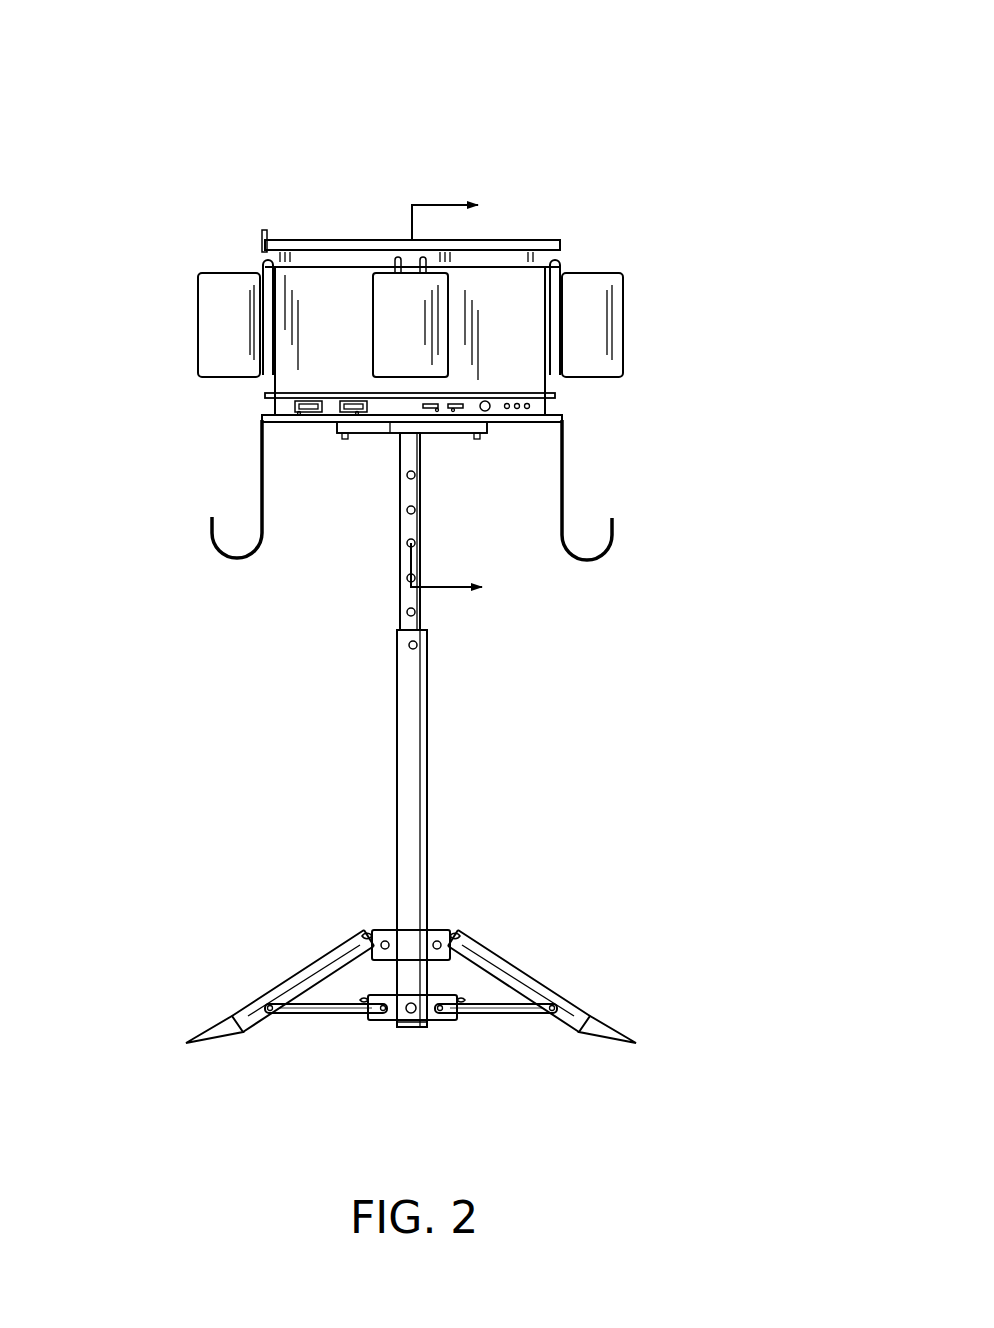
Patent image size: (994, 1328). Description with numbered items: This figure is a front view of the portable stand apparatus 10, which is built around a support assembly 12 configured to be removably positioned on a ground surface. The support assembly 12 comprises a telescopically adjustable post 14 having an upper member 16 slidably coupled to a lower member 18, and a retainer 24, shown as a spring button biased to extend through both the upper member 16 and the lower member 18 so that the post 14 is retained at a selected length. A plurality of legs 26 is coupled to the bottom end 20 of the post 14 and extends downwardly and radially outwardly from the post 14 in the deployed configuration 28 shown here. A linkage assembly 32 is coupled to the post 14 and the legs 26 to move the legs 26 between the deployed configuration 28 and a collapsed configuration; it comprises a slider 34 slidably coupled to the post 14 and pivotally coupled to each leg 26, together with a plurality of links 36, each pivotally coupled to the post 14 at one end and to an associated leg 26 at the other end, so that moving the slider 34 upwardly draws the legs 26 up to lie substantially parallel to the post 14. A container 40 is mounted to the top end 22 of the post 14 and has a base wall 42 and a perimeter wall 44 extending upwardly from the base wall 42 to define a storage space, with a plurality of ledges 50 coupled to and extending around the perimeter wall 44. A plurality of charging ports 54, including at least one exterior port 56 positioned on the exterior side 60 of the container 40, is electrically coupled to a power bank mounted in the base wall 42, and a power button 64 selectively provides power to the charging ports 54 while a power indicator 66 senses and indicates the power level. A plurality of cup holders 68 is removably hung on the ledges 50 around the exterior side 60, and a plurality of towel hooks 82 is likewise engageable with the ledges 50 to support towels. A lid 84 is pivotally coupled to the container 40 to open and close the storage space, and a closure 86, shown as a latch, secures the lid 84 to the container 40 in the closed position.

The portable stand apparatus 10 is at (722, 172).
The support assembly 12 is at (478, 805).
The post 14 is at (368, 735).
The upper member 16 is at (410, 530).
The lower member 18 is at (417, 776).
The bottom end 20 is at (410, 1025).
The top end 22 is at (413, 442).
The retainer 24 is at (420, 645).
The legs 26 is at (302, 981).
The deployed configuration 28 is at (615, 983).
The linkage assembly 32 is at (480, 1090).
The slider 34 is at (445, 931).
The links 36 is at (318, 1012).
The container 40 is at (586, 238).
The base wall 42 is at (305, 420).
The perimeter wall 44 is at (315, 323).
The ledges 50 is at (328, 250).
The charging ports 54 is at (298, 413).
The exterior port 56 is at (713, 370).
The exterior side 60 is at (510, 302).
The power button 64 is at (490, 411).
The power indicator 66 is at (571, 402).
The cup holders 68 is at (218, 280).
The towel hooks 82 is at (225, 560).
The lid 84 is at (298, 240).
The closure 86 is at (263, 238).